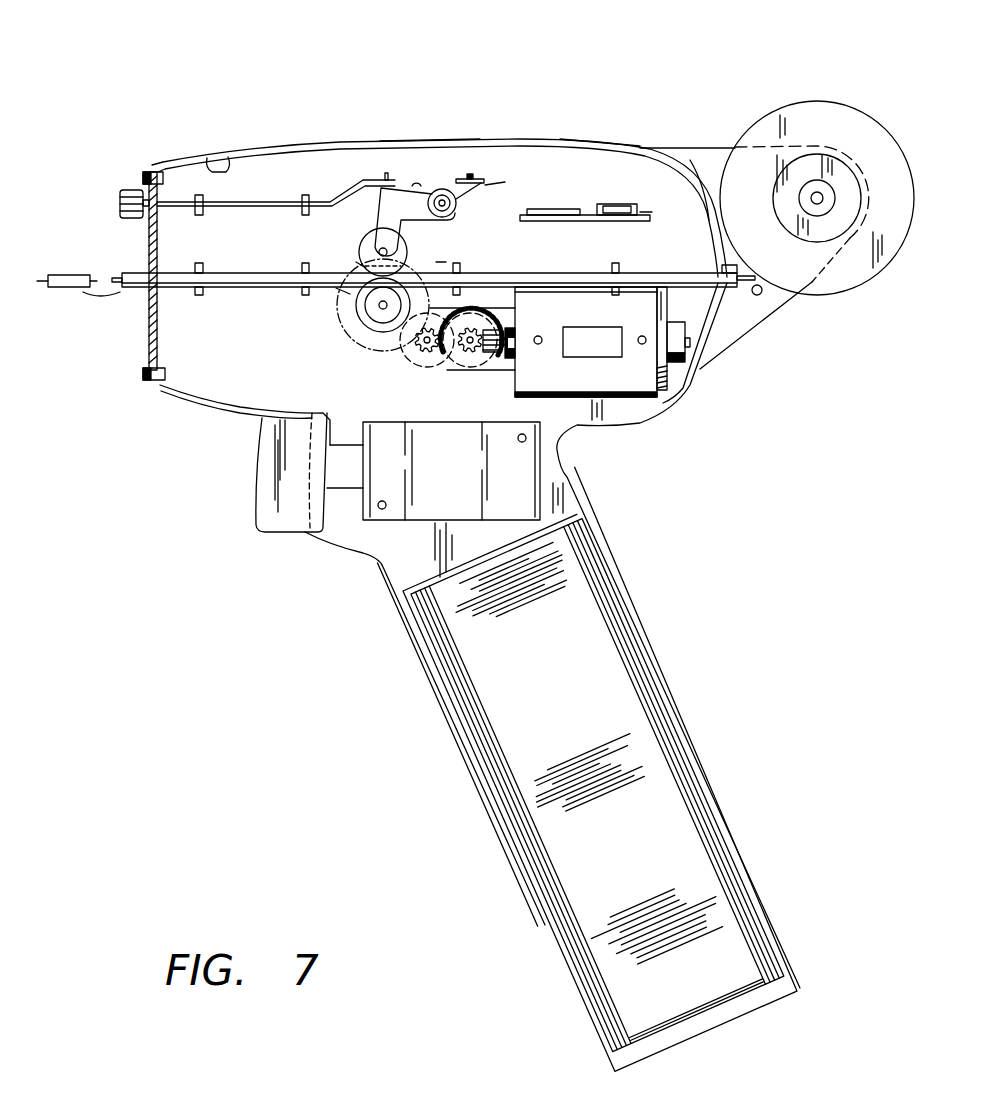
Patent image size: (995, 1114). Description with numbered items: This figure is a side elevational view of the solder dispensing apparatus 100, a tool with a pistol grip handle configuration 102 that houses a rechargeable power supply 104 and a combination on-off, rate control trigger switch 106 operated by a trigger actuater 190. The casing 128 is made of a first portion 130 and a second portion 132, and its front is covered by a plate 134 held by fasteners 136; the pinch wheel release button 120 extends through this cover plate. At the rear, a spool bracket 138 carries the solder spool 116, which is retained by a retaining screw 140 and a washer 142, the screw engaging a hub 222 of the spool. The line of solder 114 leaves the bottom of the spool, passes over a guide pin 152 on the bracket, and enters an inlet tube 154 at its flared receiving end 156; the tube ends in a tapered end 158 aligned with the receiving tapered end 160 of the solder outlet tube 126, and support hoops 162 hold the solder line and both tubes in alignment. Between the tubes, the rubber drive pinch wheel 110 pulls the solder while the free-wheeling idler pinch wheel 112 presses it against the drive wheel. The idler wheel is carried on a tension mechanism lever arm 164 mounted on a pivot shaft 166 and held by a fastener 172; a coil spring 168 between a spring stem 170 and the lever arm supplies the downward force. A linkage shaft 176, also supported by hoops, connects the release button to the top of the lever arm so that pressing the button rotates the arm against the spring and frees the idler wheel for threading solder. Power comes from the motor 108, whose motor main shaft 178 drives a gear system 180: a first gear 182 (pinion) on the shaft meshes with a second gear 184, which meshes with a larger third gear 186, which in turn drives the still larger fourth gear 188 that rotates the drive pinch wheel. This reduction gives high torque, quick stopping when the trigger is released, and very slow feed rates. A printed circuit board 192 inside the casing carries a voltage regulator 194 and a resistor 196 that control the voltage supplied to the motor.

The solder dispensing apparatus 100 is at (313, 73).
The pistol grip handle configuration 102 is at (478, 739).
The rechargeable power supply 104 is at (622, 731).
The combination on-off, rate control trigger switch 106 is at (451, 471).
The motor 108 is at (623, 378).
The drive pinch wheel 110 is at (372, 314).
The idler pinch wheel 112 is at (402, 246).
The line of solder 114 is at (43, 276).
The solder spool 116 is at (768, 138).
The pinch wheel release button 120 is at (123, 192).
The solder outlet tube 126 is at (120, 290).
The casing 128 is at (594, 139).
The first portion 130 is at (216, 158).
The second portion 132 is at (435, 141).
The plate 134 is at (148, 356).
The fasteners 136 is at (150, 168).
The spool bracket 138 is at (703, 167).
The retaining screw 140 is at (812, 188).
The washer 142 is at (828, 184).
The guide pin 152 is at (765, 296).
The inlet tube 154 is at (706, 352).
The receiving end 156 is at (724, 265).
The tapered end 158 is at (440, 263).
The receiving tapered end 160 is at (352, 264).
The support hoops 162 is at (303, 263).
The tension mechanism lever arm 164 is at (398, 192).
The pivot shaft 166 is at (437, 192).
The coil spring 168 is at (495, 183).
The spring stem 170 is at (481, 178).
The fastener 172 is at (456, 205).
The linkage shaft 176 is at (226, 206).
The motor main shaft 178 is at (505, 330).
The gear system 180 is at (332, 293).
The first gear 182 is at (496, 372).
The second gear 184 is at (468, 362).
The third gear 186 is at (412, 360).
The fourth gear 188 is at (375, 318).
The trigger actuater 190 is at (273, 468).
The printed circuit board 192 is at (652, 213).
The voltage regulator 194 is at (622, 204).
The resistor 196 is at (560, 199).
The hub 222 is at (835, 223).